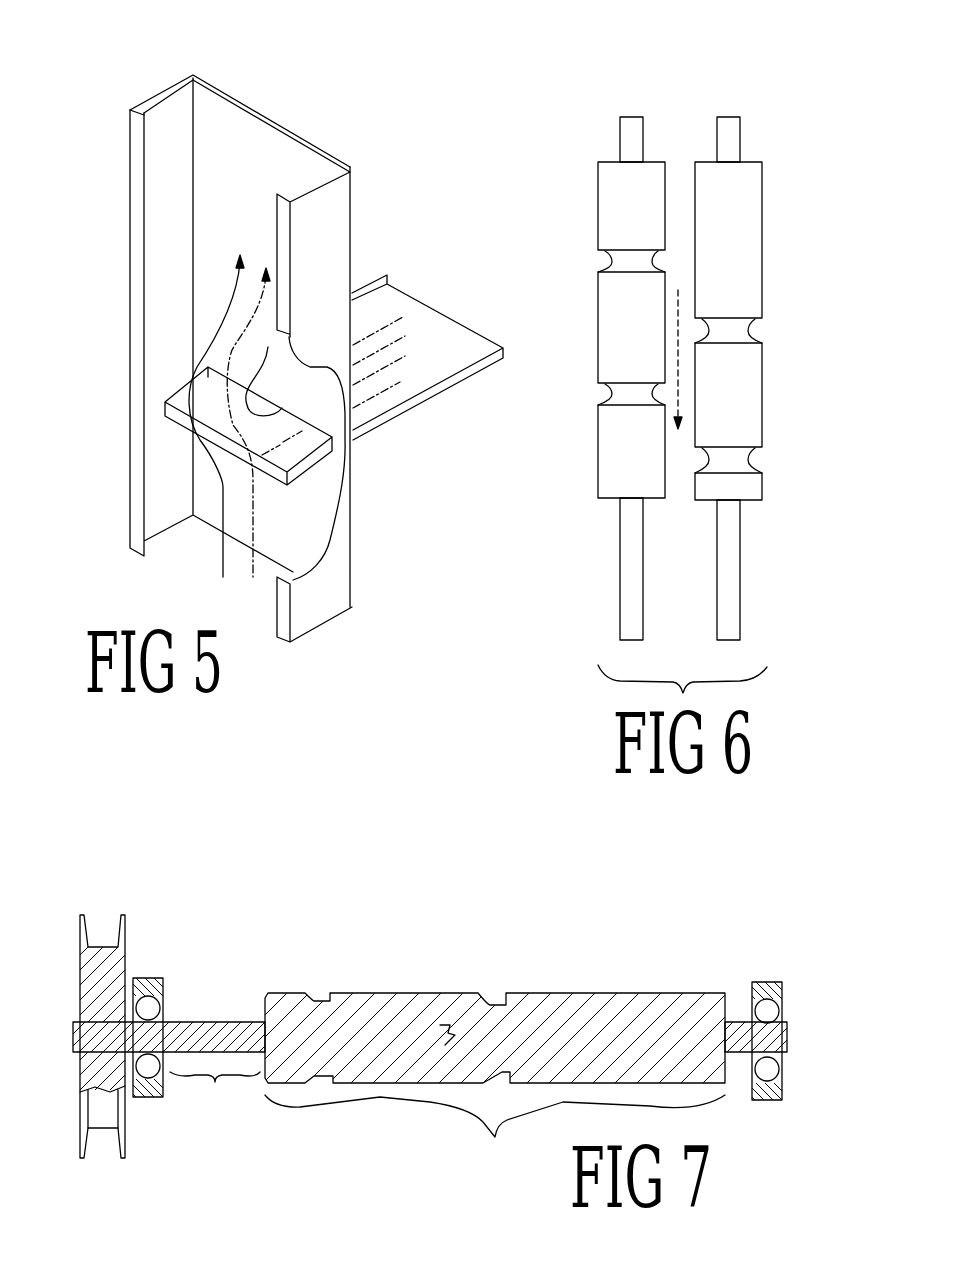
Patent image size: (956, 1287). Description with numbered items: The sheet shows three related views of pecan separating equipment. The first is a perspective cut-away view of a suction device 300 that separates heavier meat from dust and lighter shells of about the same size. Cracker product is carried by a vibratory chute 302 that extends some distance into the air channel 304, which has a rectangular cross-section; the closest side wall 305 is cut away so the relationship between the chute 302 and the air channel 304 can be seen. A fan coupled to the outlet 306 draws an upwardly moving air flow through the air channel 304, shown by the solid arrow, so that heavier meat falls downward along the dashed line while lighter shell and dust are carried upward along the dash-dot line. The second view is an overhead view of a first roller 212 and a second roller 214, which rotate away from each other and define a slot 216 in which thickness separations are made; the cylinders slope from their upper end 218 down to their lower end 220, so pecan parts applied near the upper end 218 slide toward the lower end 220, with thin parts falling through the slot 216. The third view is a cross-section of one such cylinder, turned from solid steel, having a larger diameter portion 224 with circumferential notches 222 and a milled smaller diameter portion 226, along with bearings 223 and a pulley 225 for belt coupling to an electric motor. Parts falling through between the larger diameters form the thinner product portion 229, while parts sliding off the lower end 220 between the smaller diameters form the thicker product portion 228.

In FIG. 5, the suction device 300 is at (291, 332).
In FIG. 5, the vibratory chute 302 is at (402, 333).
In FIG. 5, the air channel 304 is at (178, 292).
In FIG. 5, the side wall 305 is at (340, 601).
In FIG. 5, the outlet 306 is at (212, 86).
In FIG. 6, the first roller 212 is at (672, 135).
In FIG. 6, the second roller 214 is at (743, 277).
In FIG. 6, the slot 216 is at (718, 363).
In FIG. 6, the upper end 218 is at (637, 347).
In FIG. 7, the upper end 218 is at (732, 988).
In FIG. 6, the lower end 220 is at (681, 521).
In FIG. 7, the lower end 220 is at (262, 981).
In FIG. 7, the circumferential notches 222 is at (528, 965).
In FIG. 7, the bearings 223 is at (148, 982).
In FIG. 7, the larger diameter portion 224 is at (448, 1033).
In FIG. 7, the pulley 225 is at (103, 1118).
In FIG. 7, the smaller diameter portion 226 is at (228, 1028).
In FIG. 7, the thicker product portion 228 is at (215, 1091).
In FIG. 7, the thinner product portion 229 is at (495, 1133).